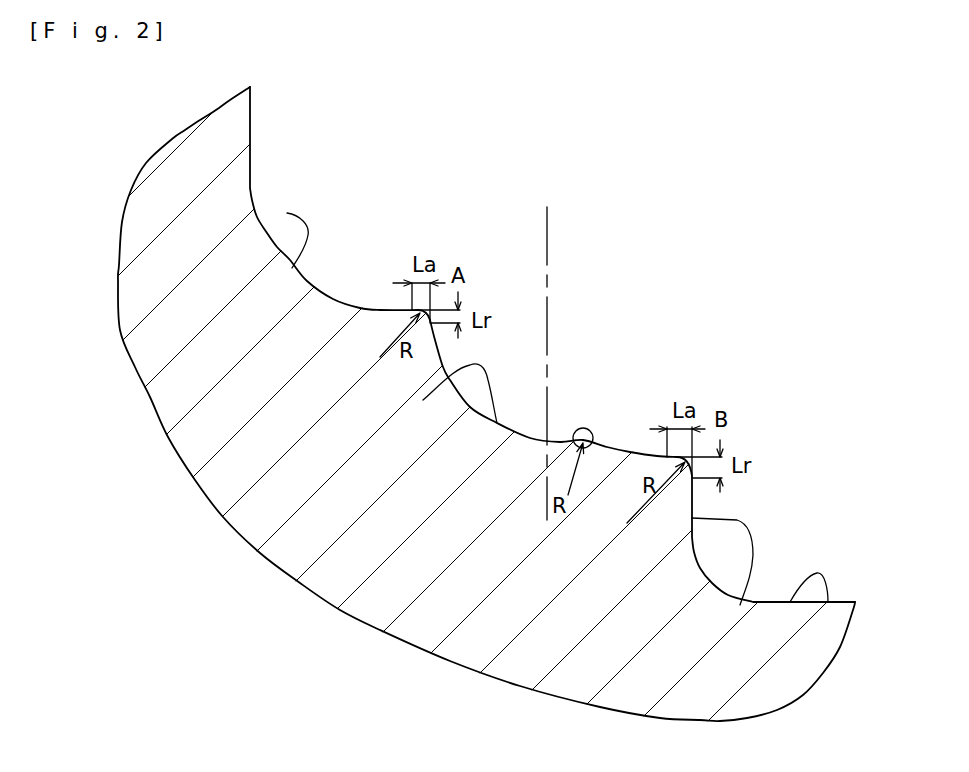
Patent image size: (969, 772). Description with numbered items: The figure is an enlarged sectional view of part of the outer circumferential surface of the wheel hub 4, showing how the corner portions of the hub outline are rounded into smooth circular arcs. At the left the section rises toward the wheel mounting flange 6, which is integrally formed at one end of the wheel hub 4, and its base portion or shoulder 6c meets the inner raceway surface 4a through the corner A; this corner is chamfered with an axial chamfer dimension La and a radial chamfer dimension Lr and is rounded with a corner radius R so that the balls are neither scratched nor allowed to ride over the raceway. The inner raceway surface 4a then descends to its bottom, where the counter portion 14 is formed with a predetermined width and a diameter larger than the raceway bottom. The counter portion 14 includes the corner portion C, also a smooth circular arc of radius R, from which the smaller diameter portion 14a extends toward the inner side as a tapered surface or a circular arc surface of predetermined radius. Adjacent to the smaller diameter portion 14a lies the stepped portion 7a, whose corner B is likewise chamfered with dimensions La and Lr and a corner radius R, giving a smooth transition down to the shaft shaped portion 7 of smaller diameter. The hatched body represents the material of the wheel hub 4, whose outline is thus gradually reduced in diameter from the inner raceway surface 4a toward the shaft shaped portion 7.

The wheel hub 4 is at (217, 495).
The inner raceway surface 4a is at (268, 548).
The wheel mounting flange 6 is at (200, 168).
The base portion (shoulder) 6c is at (287, 213).
The shaft shaped portion 7 is at (828, 602).
The stepped portion 7a is at (740, 605).
The counter portion 14 is at (645, 336).
The smaller diameter portion 14a is at (610, 447).
The corner portion C is at (585, 428).